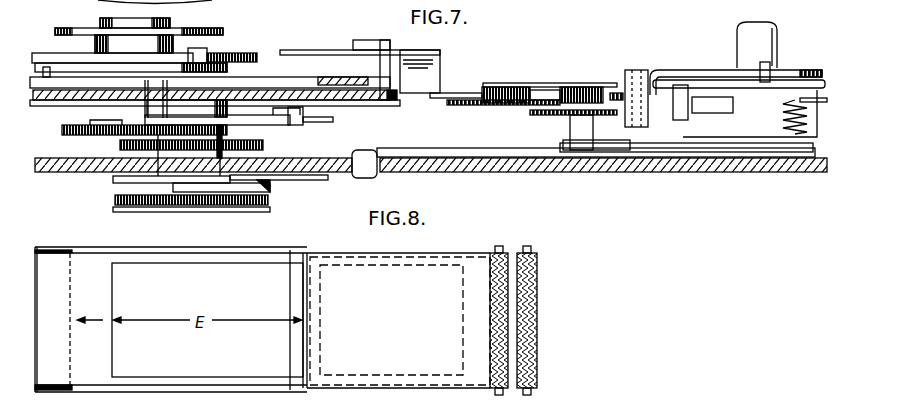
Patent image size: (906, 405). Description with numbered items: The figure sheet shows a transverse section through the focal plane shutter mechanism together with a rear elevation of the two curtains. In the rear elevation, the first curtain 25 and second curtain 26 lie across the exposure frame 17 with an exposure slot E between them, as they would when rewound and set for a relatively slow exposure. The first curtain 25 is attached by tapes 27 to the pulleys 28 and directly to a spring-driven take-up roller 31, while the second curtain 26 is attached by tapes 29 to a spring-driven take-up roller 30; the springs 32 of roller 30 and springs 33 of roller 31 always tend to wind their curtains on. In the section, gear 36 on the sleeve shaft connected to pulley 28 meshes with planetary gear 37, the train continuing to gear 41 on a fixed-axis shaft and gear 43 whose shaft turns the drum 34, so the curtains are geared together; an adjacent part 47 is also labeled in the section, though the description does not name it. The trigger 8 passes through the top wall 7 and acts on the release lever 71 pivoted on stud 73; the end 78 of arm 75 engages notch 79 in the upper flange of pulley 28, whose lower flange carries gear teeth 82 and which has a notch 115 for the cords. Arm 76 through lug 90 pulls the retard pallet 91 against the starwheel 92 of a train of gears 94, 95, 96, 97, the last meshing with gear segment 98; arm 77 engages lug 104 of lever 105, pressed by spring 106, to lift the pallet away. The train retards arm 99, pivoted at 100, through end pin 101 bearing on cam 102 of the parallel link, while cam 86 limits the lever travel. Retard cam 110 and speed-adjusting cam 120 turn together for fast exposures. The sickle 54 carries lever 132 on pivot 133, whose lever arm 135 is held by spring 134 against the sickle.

In FIG. 7, the top wall 7 is at (655, 172).
In FIG. 7, the trigger 8 is at (772, 40).
In FIG. 8, the exposure frame 17 is at (462, 318).
In FIG. 8, the first curtain 25 is at (398, 320).
In FIG. 8, the second curtain 26 is at (96, 300).
In FIG. 7, the tapes 27 is at (295, 193).
In FIG. 8, the tapes 27 is at (198, 392).
In FIG. 7, the pulleys 28 is at (115, 186).
In FIG. 8, the pulleys 28 is at (68, 250).
In FIG. 8, the tapes 29 is at (268, 263).
In FIG. 8, the take-up roller 30 is at (504, 246).
In FIG. 8, the take-up roller 31 is at (530, 246).
In FIG. 8, the springs 32 is at (500, 290).
In FIG. 8, the springs 33 is at (532, 362).
In FIG. 7, the drum 34 is at (155, 208).
In FIG. 8, the drum 34 is at (72, 292).
In FIG. 7, the gear 36 is at (125, 150).
In FIG. 7, the planetary gear 37 is at (260, 148).
In FIG. 7, the gear 41 is at (64, 126).
In FIG. 7, the gear 43 is at (228, 128).
In FIG. 7, the gear 47 is at (106, 117).
In FIG. 7, the sickle 54 is at (343, 77).
In FIG. 7, the release lever 71 is at (472, 93).
In FIG. 7, the stud 73 is at (572, 128).
In FIG. 7, the arm 75 is at (432, 150).
In FIG. 7, the arm 76 is at (688, 70).
In FIG. 7, the arm 77 is at (800, 70).
In FIG. 7, the end of arm 78 is at (233, 220).
In FIG. 7, the notch 79 is at (264, 193).
In FIG. 7, the gear teeth 82 is at (116, 200).
In FIG. 7, the cam 86 is at (66, 30).
In FIG. 7, the lug 90 is at (636, 122).
In FIG. 7, the retard pallet 91 is at (712, 113).
In FIG. 7, the starwheel 92 is at (615, 93).
In FIG. 7, the gear 94 is at (532, 115).
In FIG. 7, the gear 95 is at (568, 87).
In FIG. 7, the gear 96 is at (455, 106).
In FIG. 7, the gear 97 is at (520, 87).
In FIG. 7, the gear segment 98 is at (488, 83).
In FIG. 7, the arm 99 is at (430, 50).
In FIG. 7, the pivot 100 is at (360, 46).
In FIG. 7, the end pin 101 is at (200, 50).
In FIG. 7, the cam 102 is at (333, 120).
In FIG. 7, the lug 104 is at (760, 64).
In FIG. 7, the lever 105 is at (750, 137).
In FIG. 7, the spring 106 is at (790, 104).
In FIG. 7, the retard cam 110 is at (264, 38).
In FIG. 7, the notch 115 is at (180, 206).
In FIG. 7, the speed-adjusting cam 120 is at (228, 68).
In FIG. 7, the lever 132 is at (278, 8).
In FIG. 7, the pivot 133 is at (241, 5).
In FIG. 7, the spring 134 is at (311, 15).
In FIG. 7, the lever arm 135 is at (312, 0).